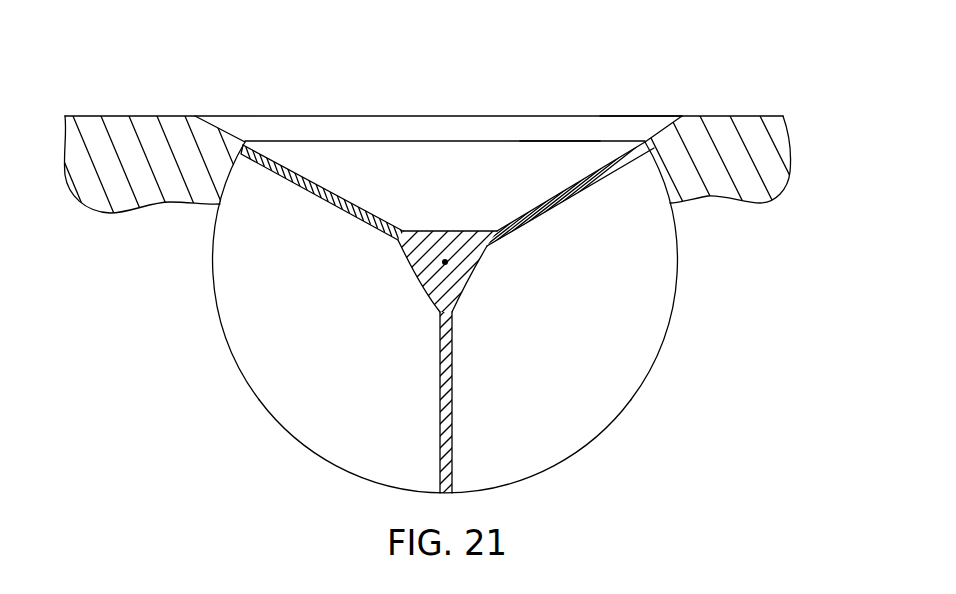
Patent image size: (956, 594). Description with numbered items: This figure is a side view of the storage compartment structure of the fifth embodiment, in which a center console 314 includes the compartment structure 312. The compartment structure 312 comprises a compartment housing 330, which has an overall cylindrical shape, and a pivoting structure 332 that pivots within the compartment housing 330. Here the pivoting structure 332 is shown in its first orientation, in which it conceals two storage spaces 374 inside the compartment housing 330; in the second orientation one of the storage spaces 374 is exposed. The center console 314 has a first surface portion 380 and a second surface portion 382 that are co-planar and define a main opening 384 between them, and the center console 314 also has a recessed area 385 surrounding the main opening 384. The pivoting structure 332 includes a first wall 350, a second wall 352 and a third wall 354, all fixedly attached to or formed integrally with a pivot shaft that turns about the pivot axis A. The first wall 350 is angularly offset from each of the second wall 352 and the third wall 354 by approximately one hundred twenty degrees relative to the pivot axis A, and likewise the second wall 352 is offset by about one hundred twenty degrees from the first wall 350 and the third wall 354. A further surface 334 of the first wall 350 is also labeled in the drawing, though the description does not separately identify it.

The center console 314 is at (92, 106).
The compartment structure 312 is at (409, 130).
The first surface portion 380 is at (177, 115).
The second surface portion 382 is at (743, 116).
The main opening 384 is at (556, 140).
The recessed area 385 is at (610, 128).
The compartment housing 330 is at (676, 296).
The storage spaces 374 is at (298, 372).
The left arm upper surface 334 is at (285, 151).
The first wall 350 is at (347, 200).
The second wall 352 is at (545, 200).
The pivoting structure 332 is at (414, 291).
The pivot axis A is at (445, 262).
The third wall 354 is at (451, 410).